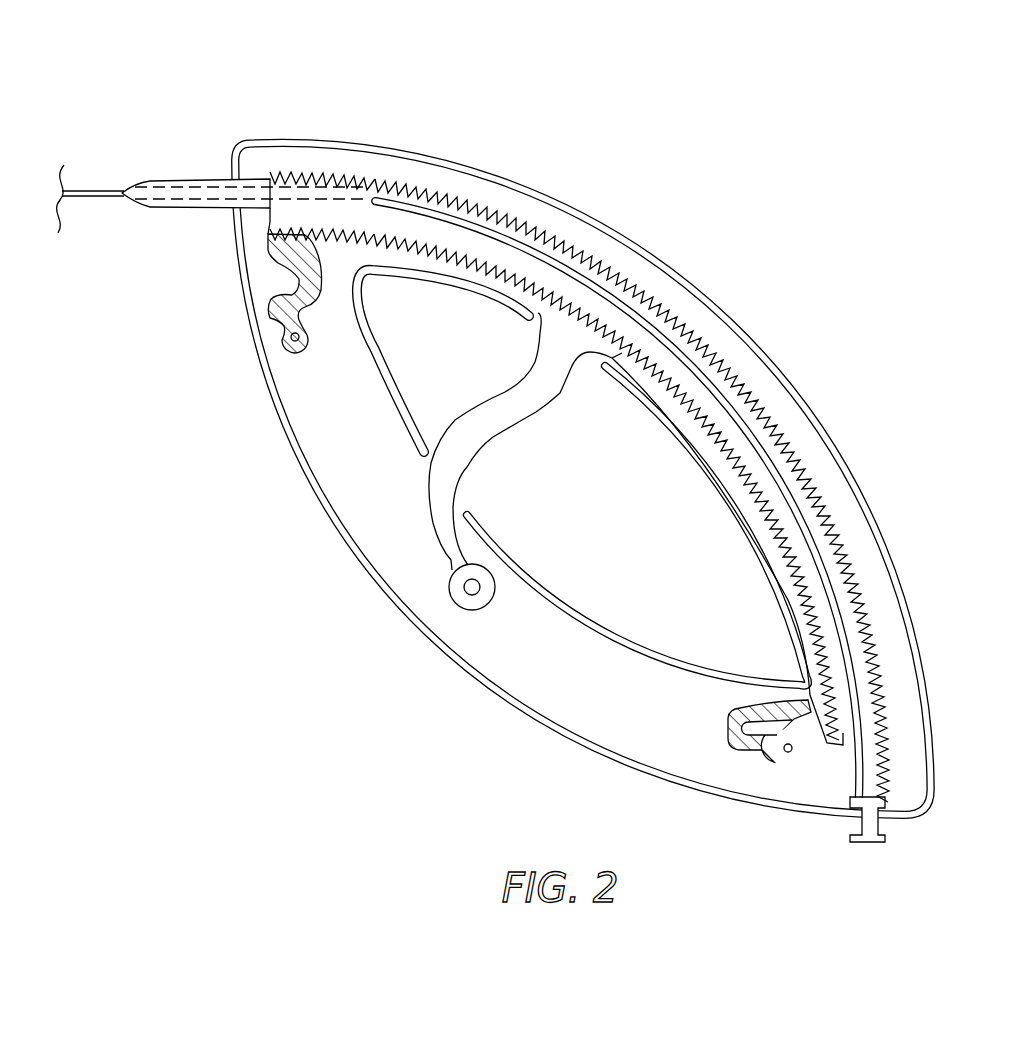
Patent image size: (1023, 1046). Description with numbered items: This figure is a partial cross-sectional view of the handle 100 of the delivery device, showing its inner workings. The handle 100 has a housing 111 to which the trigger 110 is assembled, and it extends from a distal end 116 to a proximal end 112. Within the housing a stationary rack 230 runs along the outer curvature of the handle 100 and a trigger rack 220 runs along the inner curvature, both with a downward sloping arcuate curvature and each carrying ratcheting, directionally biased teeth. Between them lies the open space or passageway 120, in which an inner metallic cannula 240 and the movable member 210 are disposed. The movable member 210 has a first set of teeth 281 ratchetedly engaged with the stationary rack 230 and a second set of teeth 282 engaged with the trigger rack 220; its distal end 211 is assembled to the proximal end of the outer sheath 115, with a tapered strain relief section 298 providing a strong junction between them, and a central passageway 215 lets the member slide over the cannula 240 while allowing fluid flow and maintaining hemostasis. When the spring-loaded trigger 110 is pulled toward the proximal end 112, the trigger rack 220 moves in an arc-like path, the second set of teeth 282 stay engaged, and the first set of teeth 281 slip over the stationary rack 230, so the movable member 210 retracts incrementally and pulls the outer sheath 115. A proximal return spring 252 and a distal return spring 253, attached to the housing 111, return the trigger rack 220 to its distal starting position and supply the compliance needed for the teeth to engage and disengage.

The handle 100 is at (860, 343).
The trigger 110 is at (502, 425).
The housing 111 is at (553, 724).
The proximal end 112 is at (916, 812).
The outer sheath 115 is at (95, 197).
The distal end 116 is at (250, 140).
The open space / passageway 120 is at (603, 452).
The movable member 210 is at (265, 181).
The distal end of the movable member 211 is at (121, 191).
The central passageway 215 is at (206, 207).
The trigger rack 220 is at (554, 484).
The stationary rack 230 is at (579, 452).
The inner metallic cannula 240 is at (857, 713).
The proximal return spring 252 is at (783, 766).
The distal return spring 253 is at (291, 349).
The first set of teeth 281 is at (303, 172).
The second set of teeth 282 is at (313, 238).
The strain relief section 298 is at (226, 180).